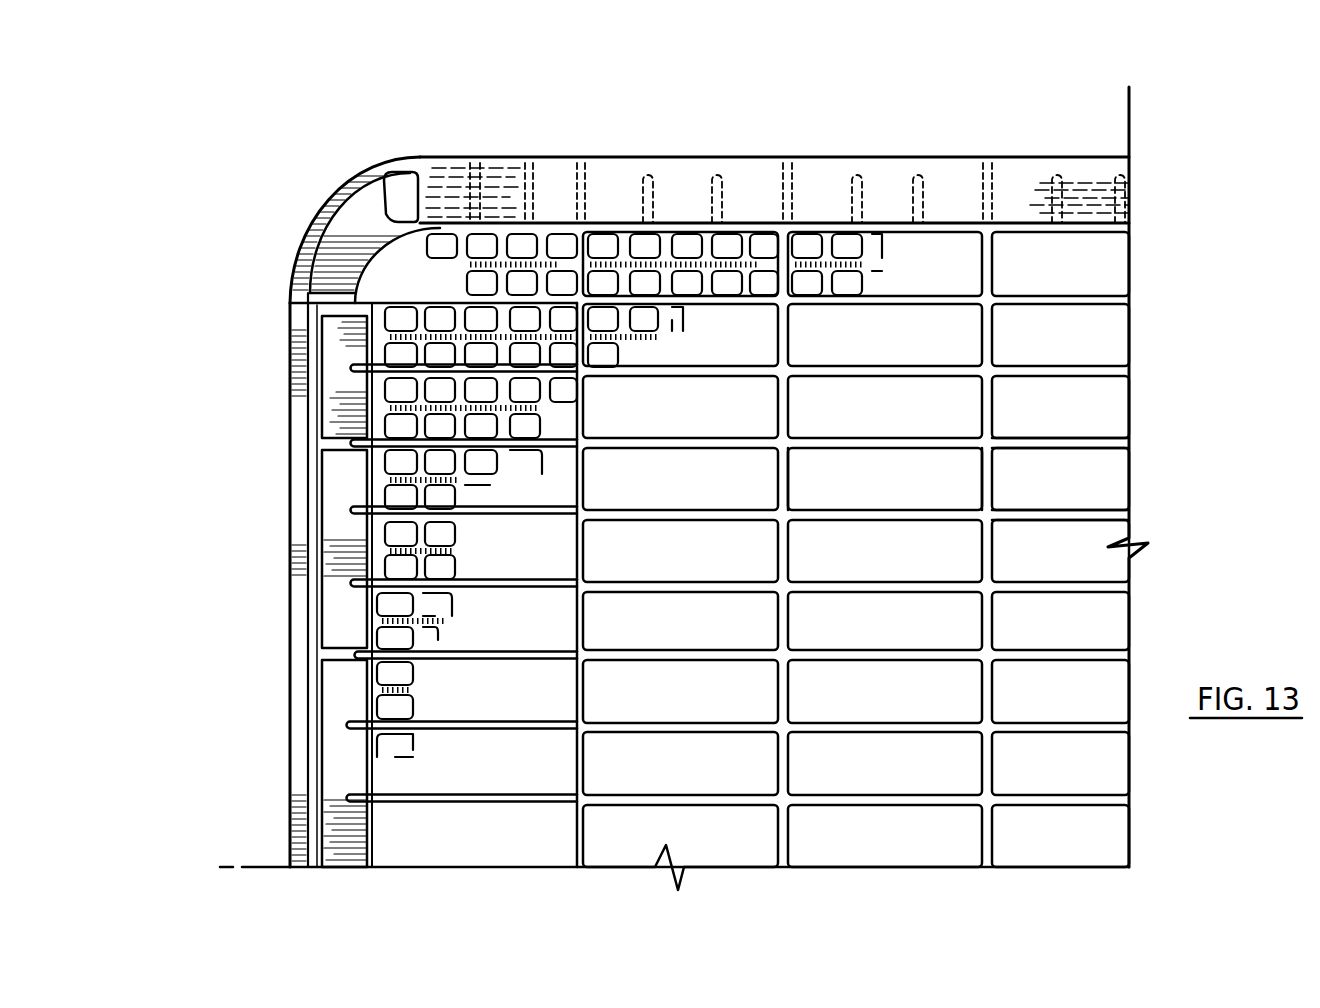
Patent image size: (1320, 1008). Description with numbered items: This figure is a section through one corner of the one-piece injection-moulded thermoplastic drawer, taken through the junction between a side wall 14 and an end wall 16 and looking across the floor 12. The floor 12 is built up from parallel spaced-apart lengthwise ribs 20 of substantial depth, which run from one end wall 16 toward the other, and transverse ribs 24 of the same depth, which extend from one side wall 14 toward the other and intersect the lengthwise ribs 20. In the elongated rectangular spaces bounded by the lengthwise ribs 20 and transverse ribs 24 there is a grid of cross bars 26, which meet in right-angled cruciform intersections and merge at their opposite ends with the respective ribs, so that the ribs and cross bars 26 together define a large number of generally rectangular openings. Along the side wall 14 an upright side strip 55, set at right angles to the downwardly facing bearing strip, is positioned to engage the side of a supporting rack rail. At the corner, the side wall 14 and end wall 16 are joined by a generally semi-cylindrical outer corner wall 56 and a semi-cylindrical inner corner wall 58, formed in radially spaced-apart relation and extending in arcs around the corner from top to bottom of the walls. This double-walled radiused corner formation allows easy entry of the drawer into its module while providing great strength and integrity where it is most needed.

The floor 12 is at (1085, 348).
The side walls 14 is at (849, 150).
The end walls 16 is at (270, 503).
The lengthwise ribs 20 is at (1075, 445).
The transverse ribs 24 is at (793, 484).
The cross bars 26 is at (543, 337).
The upright side strips 55 is at (681, 222).
The outer corner walls 56 is at (333, 200).
The inner corner walls 58 is at (378, 230).